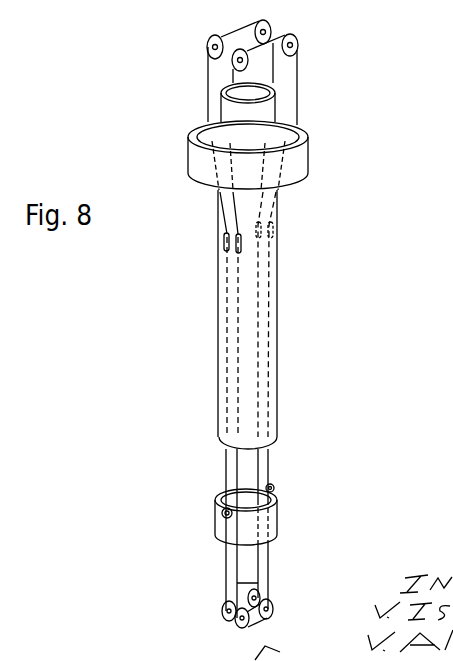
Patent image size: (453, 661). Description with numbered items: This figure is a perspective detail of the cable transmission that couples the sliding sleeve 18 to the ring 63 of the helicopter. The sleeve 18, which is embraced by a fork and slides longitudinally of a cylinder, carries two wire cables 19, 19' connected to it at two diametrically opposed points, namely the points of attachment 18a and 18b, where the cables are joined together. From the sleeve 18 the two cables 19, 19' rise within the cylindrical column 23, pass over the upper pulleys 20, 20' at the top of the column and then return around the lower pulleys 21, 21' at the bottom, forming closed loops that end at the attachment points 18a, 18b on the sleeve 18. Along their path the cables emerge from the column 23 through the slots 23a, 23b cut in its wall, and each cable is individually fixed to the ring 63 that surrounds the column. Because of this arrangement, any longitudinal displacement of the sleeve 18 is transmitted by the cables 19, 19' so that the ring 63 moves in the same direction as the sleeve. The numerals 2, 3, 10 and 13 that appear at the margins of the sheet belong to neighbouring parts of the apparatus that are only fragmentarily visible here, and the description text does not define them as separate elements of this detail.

The part 2 is at (117, 0).
The part 3 is at (385, 0).
The part 10 is at (41, 7).
The part 13 is at (65, 6).
The sleeve 18 is at (278, 521).
The point of attachment 18a is at (223, 512).
The point of attachment 18b is at (273, 488).
The wire cable 19 is at (204, 332).
The wire cable 19' is at (309, 326).
The upper pulley 20 is at (239, 29).
The upper pulley 20' is at (298, 55).
The lower pulley 21 is at (211, 605).
The lower pulley 21' is at (296, 611).
The cylindrical column 23 is at (278, 272).
The slot 23a is at (237, 252).
The slot 23b is at (275, 231).
The ring 63 is at (309, 160).